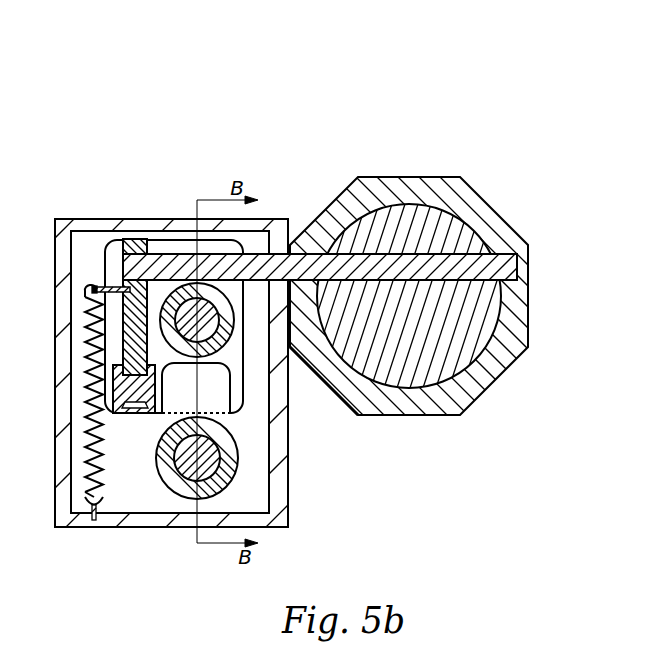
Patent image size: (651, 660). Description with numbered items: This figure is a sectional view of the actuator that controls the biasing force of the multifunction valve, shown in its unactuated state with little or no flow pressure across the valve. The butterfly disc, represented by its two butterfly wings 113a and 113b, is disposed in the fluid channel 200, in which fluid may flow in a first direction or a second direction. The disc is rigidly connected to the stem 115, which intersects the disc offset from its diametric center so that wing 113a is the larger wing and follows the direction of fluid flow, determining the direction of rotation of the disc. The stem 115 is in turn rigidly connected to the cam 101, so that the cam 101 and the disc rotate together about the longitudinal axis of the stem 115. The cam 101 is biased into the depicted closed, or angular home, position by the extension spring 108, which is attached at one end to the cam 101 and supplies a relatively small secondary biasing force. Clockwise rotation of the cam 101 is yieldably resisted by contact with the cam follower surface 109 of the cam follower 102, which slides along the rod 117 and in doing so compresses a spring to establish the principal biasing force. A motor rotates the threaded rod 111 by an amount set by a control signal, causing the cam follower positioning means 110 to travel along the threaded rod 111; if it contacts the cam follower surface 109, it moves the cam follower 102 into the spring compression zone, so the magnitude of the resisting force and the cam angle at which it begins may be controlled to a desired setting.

The cam 101 is at (122, 300).
The cam follower 102 is at (103, 275).
The extension spring 108 is at (94, 478).
The cam follower surface 109 is at (113, 270).
The cam follower positioning means 110 is at (233, 422).
The threaded rod 111 is at (205, 452).
The butterfly wing 113a is at (418, 322).
The butterfly wing 113b is at (418, 230).
The stem 115 is at (203, 317).
The rod 117 is at (225, 265).
The fluid channel 200 is at (380, 207).